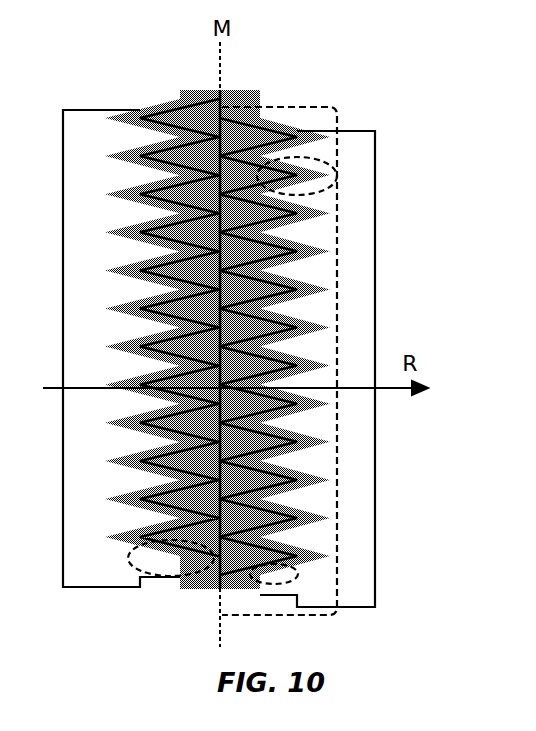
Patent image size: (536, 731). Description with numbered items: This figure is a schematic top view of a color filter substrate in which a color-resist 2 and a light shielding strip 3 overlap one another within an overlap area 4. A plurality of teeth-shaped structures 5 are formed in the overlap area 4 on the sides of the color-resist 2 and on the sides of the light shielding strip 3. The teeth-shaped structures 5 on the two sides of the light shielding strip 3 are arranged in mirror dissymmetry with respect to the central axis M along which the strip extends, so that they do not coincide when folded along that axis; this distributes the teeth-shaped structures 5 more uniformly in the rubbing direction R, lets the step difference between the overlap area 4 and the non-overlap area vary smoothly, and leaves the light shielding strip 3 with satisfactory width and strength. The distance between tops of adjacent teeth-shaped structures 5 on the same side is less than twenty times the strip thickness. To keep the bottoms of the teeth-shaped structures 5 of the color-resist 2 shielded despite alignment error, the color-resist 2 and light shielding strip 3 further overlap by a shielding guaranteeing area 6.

The color-resist 2 is at (77, 120).
The light shielding strip 3 is at (243, 92).
The overlap area 4 is at (338, 265).
The teeth-shaped structures 5 is at (325, 165).
The shielding guaranteeing area 6 is at (282, 575).